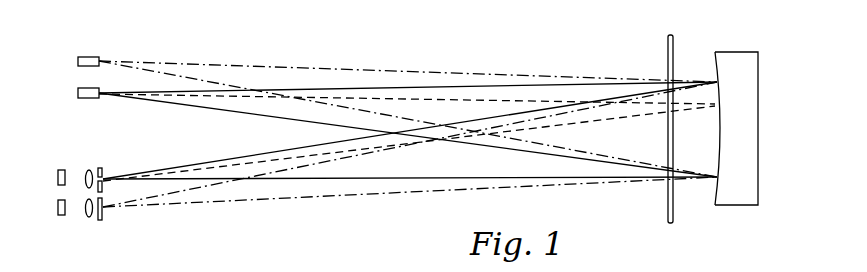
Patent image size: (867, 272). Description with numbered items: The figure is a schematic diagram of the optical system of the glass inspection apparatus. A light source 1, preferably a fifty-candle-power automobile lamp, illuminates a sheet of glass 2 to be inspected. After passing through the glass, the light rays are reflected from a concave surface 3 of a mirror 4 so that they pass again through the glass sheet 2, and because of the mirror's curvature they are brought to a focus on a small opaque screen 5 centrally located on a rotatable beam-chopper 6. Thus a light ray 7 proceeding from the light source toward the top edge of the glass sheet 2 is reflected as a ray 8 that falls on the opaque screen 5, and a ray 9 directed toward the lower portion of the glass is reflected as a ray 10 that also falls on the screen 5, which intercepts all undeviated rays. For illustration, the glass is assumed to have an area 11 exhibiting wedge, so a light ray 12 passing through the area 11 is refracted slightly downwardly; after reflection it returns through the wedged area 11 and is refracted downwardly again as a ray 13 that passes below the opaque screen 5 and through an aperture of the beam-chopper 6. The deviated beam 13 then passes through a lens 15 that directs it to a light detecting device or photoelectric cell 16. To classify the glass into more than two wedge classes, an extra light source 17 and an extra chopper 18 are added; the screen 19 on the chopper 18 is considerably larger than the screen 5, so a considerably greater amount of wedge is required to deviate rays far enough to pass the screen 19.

The light source 1 is at (82, 93).
The sheet of glass 2 is at (668, 197).
The concave surface 3 is at (720, 145).
The mirror 4 is at (735, 128).
The opaque screen 5 is at (103, 176).
The beam-chopper 6 is at (101, 165).
The light ray 7 is at (297, 88).
The ray 8 is at (410, 130).
The ray 9 is at (222, 110).
The ray 10 is at (393, 178).
The area exhibiting wedge 11 is at (673, 105).
The light ray 12 is at (417, 98).
The deviated ray 13 is at (597, 120).
The lens 15 is at (88, 168).
The photoelectric cell 16 is at (60, 168).
The light source 17 is at (87, 57).
The chopper 18 is at (100, 220).
The screen 19 is at (103, 208).